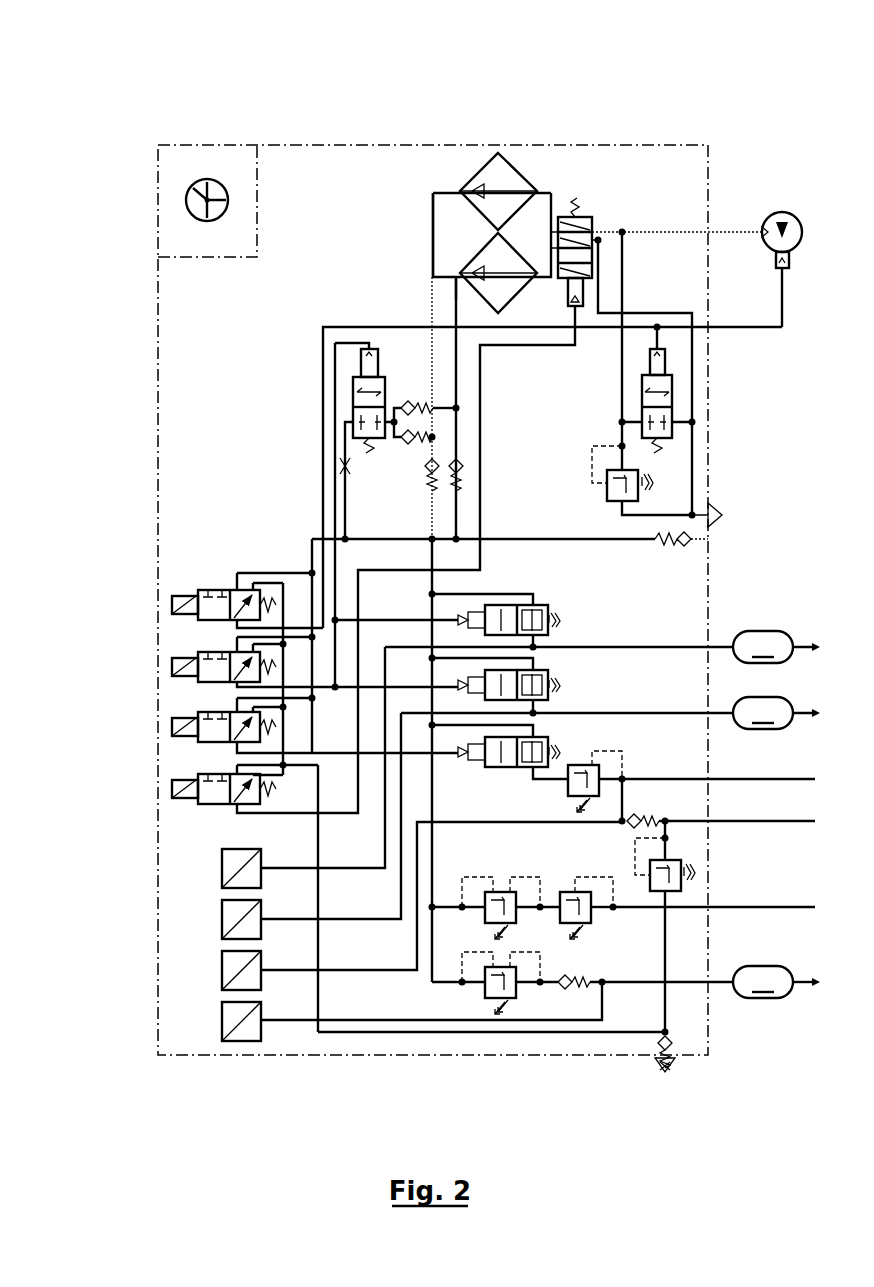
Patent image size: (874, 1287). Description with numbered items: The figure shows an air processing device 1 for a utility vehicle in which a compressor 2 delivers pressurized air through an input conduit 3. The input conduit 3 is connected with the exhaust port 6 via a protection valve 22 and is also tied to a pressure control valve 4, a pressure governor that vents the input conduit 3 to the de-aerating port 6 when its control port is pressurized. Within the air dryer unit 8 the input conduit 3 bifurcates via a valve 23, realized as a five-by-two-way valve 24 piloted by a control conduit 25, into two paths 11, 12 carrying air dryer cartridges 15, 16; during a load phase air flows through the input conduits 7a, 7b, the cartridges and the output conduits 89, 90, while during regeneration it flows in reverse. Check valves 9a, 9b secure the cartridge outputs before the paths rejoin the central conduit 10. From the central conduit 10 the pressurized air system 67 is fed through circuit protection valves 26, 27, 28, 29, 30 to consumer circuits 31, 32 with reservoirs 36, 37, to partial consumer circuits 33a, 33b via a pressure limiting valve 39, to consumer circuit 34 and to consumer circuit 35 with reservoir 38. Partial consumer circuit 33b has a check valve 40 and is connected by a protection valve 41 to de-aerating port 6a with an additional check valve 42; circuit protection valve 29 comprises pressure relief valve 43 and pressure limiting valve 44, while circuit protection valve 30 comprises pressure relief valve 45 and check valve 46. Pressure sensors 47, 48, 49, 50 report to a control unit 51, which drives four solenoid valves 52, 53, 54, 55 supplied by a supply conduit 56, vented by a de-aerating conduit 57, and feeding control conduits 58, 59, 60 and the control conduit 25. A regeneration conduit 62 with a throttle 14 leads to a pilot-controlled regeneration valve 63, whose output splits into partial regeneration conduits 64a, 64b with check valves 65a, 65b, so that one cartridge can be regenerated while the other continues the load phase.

The air processing device 1 is at (652, 116).
The compressor 2 is at (782, 208).
The input conduit 3 is at (731, 228).
The pressure control valve 4 is at (676, 400).
The de-aerating port 6 is at (724, 515).
The de-aerating port 6a is at (661, 1104).
The input conduit 7a is at (533, 188).
The input conduit 7b is at (533, 280).
The air dryer unit 8 is at (408, 194).
The check valve 9a is at (430, 477).
The check valve 9b is at (465, 466).
The central conduit 10 is at (430, 550).
The path 11 is at (438, 178).
The path 12 is at (461, 253).
The throttle 14 is at (339, 466).
The air dryer cartridge 15 is at (512, 175).
The air dryer cartridge 16 is at (503, 268).
The protection valve 22 is at (600, 494).
The valve 23 is at (571, 208).
The 5/2-way valve 24 is at (575, 292).
The control conduit 25 is at (528, 348).
The circuit protection valve 26 is at (551, 600).
The circuit protection valve 27 is at (551, 667).
The circuit protection valve 28 is at (551, 733).
The circuit protection valve 29 is at (527, 872).
The circuit protection valve 30 is at (480, 1003).
The consumer circuit 31 is at (718, 634).
The consumer circuit 32 is at (718, 702).
The partial consumer circuit 33a is at (718, 775).
The partial consumer circuit 33b is at (718, 820).
The consumer circuit 34 is at (718, 897).
The consumer circuit 35 is at (716, 976).
The reservoir 36 is at (763, 647).
The reservoir 37 is at (763, 713).
The reservoir 38 is at (763, 982).
The pressure limiting valve 39 is at (594, 758).
The check valve 40 is at (637, 813).
The protection valve 41 is at (676, 856).
The check valve 42 is at (679, 1045).
The pressure relief valve 43 is at (482, 872).
The pressure limiting valve 44 is at (585, 872).
The pressure relief valve 45 is at (498, 1010).
The check valve 46 is at (565, 994).
The pressure sensor 47 is at (218, 868).
The pressure sensor 48 is at (218, 919).
The pressure sensor 49 is at (218, 970).
The pressure sensor 50 is at (218, 1020).
The control unit 51 is at (240, 165).
The solenoid valve 52 is at (165, 605).
The solenoid valve 53 is at (165, 667).
The solenoid valve 54 is at (165, 727).
The solenoid valve 55 is at (165, 789).
The supply conduit 56 is at (309, 553).
The de-aerating conduit 57 is at (375, 1036).
The control conduit 58 is at (388, 326).
The control conduit 59 is at (320, 690).
The control conduit 60 is at (320, 768).
The regeneration conduit 62 is at (330, 498).
The regeneration valve 63 is at (348, 392).
The partial regeneration conduit 64a is at (392, 398).
The partial regeneration conduit 64b is at (392, 440).
The check valve 65a is at (409, 398).
The check valve 65b is at (406, 447).
The pressurized air system 67 is at (783, 820).
The output conduit 89 is at (430, 258).
The output conduit 90 is at (450, 283).